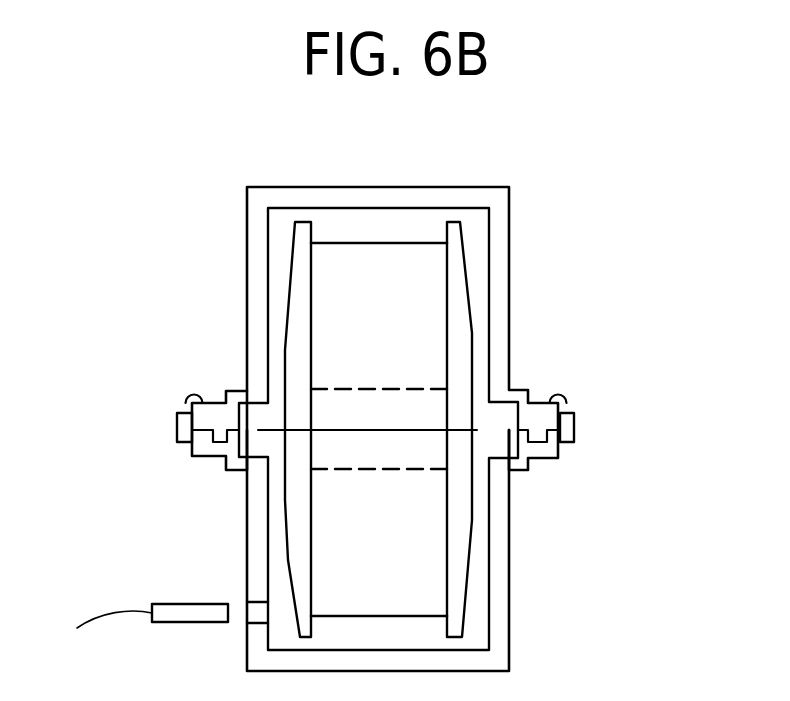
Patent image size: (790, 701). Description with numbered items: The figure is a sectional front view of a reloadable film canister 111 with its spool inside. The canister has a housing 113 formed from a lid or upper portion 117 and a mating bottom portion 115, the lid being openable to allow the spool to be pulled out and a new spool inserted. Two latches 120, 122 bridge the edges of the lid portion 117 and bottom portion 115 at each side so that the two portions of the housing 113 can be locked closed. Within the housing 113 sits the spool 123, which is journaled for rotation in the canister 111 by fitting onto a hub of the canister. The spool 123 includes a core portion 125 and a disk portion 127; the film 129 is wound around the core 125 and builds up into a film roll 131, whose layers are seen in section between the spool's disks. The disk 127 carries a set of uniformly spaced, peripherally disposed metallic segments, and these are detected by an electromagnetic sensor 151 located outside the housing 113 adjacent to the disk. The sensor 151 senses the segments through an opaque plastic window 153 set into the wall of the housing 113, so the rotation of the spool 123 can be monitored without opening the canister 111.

The reloadable film canister 111 is at (380, 148).
The housing 113 is at (247, 252).
The bottom portion 115 is at (509, 607).
The lid 117 is at (509, 282).
The latch 120 is at (177, 428).
The latch 122 is at (575, 428).
The spool 123 is at (408, 235).
The core portion 125 is at (373, 390).
The disk portion 127 is at (300, 250).
The film 129 is at (375, 255).
The film roll 131 is at (358, 615).
The electromagnetic sensor 151 is at (172, 604).
The opaque plastic window 153 is at (258, 614).